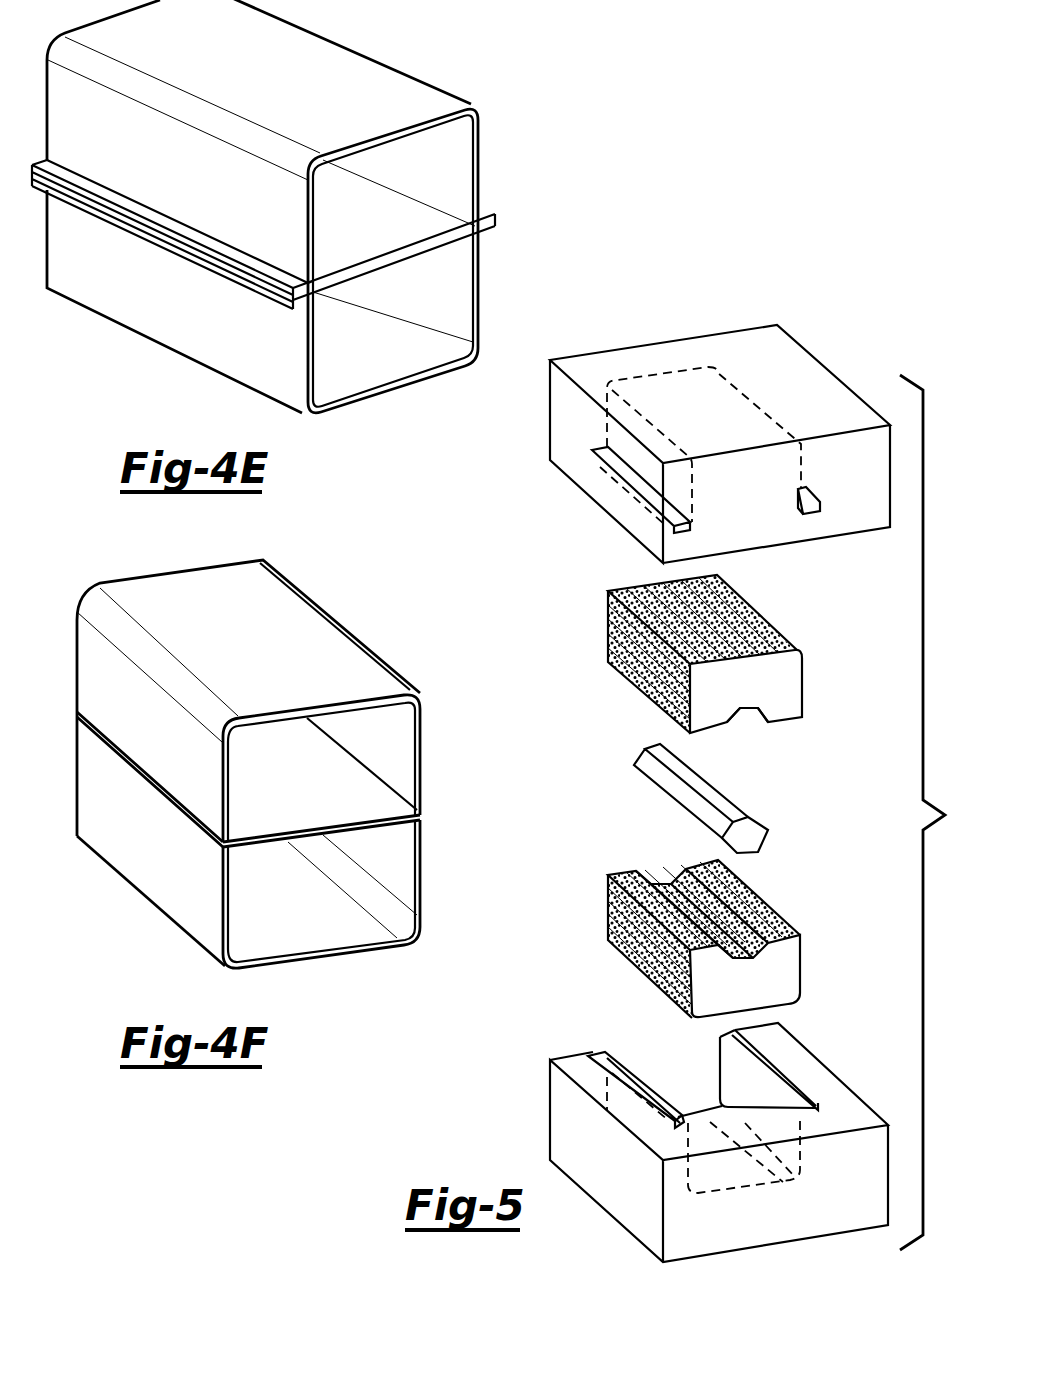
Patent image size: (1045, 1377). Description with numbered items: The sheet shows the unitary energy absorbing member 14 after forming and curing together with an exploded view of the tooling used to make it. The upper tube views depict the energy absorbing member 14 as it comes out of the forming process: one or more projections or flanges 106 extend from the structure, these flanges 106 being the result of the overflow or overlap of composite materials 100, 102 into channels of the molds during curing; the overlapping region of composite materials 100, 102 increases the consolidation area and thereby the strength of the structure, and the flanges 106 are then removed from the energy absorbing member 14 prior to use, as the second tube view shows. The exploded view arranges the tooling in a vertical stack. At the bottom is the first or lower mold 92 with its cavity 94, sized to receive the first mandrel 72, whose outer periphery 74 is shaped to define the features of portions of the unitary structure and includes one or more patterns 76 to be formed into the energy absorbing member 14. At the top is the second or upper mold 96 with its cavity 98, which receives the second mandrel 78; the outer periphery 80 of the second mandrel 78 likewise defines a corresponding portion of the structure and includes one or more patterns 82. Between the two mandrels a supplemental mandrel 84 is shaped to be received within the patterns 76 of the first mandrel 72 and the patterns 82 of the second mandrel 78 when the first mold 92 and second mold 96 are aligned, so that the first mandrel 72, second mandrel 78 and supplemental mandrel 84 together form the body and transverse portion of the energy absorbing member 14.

In FIG. 4E, the energy absorbing member 14 is at (378, 44).
In FIG. 4F, the energy absorbing member 14 is at (353, 618).
In FIG. 4E, the flanges 106 is at (490, 218).
In FIG. 5, the second mold 96 is at (720, 410).
In FIG. 5, the cavity 98 is at (676, 412).
In FIG. 5, the outer periphery 80 is at (720, 676).
In FIG. 5, the second mandrel 78 is at (785, 690).
In FIG. 5, the patterns 82 is at (736, 721).
In FIG. 5, the composite material 102 is at (634, 658).
In FIG. 5, the supplemental mandrel 84 is at (750, 832).
In FIG. 5, the patterns 76 is at (647, 874).
In FIG. 5, the composite material 100 is at (776, 917).
In FIG. 5, the first mandrel 72 is at (748, 917).
In FIG. 5, the outer periphery 74 is at (672, 990).
In FIG. 5, the cavity 94 is at (760, 1092).
In FIG. 5, the first mold 92 is at (722, 1144).